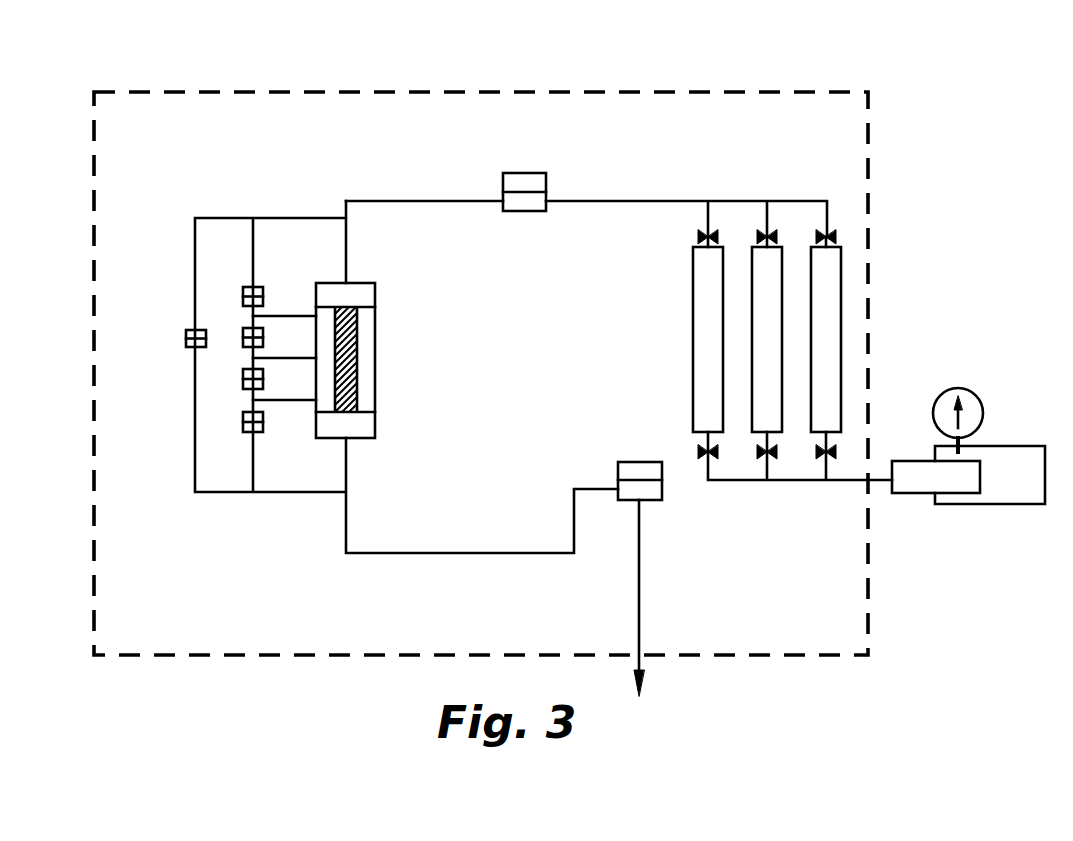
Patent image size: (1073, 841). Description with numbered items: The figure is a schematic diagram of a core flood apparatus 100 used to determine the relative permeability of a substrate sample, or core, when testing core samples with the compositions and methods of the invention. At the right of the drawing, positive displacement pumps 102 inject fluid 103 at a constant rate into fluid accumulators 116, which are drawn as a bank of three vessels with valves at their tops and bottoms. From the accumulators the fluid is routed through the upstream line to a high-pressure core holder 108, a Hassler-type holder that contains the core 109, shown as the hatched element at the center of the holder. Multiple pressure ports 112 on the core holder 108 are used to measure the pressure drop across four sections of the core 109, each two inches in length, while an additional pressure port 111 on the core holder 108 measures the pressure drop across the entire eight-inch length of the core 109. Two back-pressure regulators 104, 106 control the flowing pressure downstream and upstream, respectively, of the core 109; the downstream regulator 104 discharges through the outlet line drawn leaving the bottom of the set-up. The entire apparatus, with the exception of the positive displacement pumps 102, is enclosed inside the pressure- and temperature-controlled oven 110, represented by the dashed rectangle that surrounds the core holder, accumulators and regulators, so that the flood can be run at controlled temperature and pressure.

The core flood apparatus 100 is at (833, 55).
The positive displacement pumps 102 is at (1028, 453).
The fluid 103 is at (875, 482).
The back-pressure regulator 104 is at (639, 460).
The back-pressure regulator 106 is at (532, 212).
The high-pressure core holder 108 is at (375, 319).
The core 109 is at (348, 367).
The pressure- and temperature-controlled oven 110 is at (872, 187).
The pressure port 111 is at (186, 335).
The pressure ports 112 is at (243, 335).
The fluid accumulators 116 is at (712, 348).